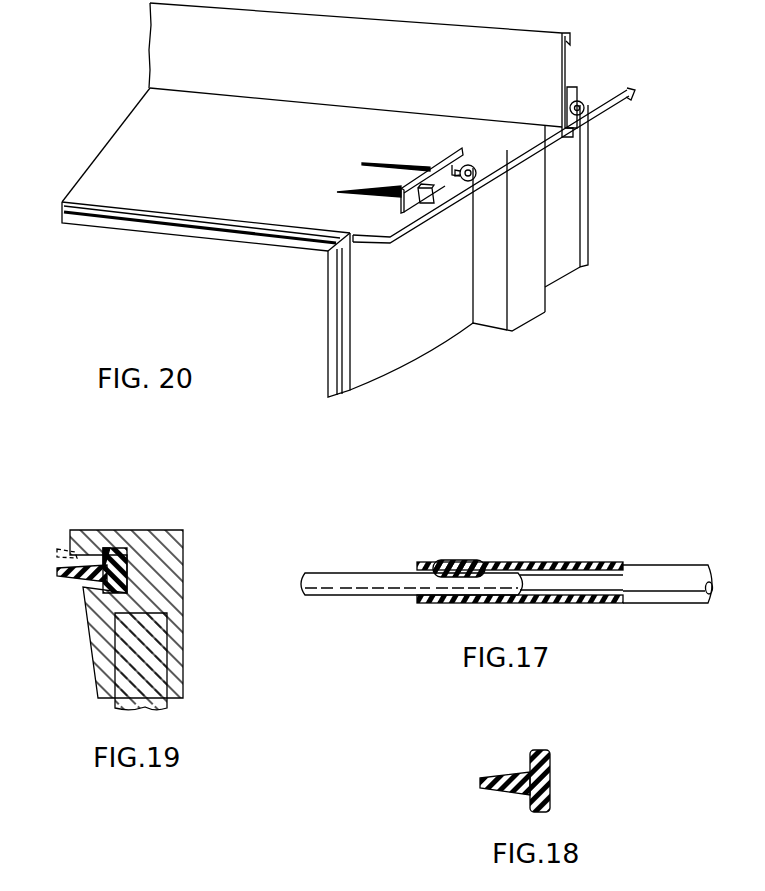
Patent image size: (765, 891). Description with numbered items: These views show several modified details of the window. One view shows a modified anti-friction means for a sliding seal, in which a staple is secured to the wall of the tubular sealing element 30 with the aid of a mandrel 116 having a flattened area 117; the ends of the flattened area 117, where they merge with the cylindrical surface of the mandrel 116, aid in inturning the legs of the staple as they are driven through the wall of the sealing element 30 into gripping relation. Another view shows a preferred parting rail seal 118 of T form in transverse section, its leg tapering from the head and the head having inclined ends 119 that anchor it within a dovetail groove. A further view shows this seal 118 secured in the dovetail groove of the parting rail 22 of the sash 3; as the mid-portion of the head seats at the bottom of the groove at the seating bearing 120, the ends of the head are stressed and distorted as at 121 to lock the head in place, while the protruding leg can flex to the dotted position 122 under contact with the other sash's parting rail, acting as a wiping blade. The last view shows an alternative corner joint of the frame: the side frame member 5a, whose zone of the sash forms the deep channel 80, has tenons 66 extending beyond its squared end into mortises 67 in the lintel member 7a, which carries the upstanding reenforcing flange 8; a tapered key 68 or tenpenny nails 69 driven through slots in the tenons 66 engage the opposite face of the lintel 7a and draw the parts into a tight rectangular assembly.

In FIG. 20, the reenforcing flange 8 is at (538, 38).
In FIG. 20, the tenon 66 is at (469, 164).
In FIG. 20, the lintel member 7a is at (607, 92).
In FIG. 20, the mortise 67 is at (412, 208).
In FIG. 20, the tenpenny nail 69 is at (403, 166).
In FIG. 20, the tapered key 68 is at (362, 190).
In FIG. 20, the channel 80 is at (540, 214).
In FIG. 20, the side frame member 5a is at (427, 296).
In FIG. 19, the dotted line position of seal leg 122 is at (60, 548).
In FIG. 19, the distorted head ends 121 is at (108, 548).
In FIG. 19, the seating bearing 120 is at (128, 548).
In FIG. 19, the seal 118 is at (75, 581).
In FIG. 18, the seal 118 is at (495, 780).
In FIG. 19, the parting rail 22 is at (178, 590).
In FIG. 19, the sash 3 is at (167, 708).
In FIG. 17, the mandrel 116 is at (337, 590).
In FIG. 17, the flattened area 117 is at (457, 577).
In FIG. 17, the tubular sealing element 30 is at (668, 568).
In FIG. 18, the inclined ends of head 119 is at (538, 753).